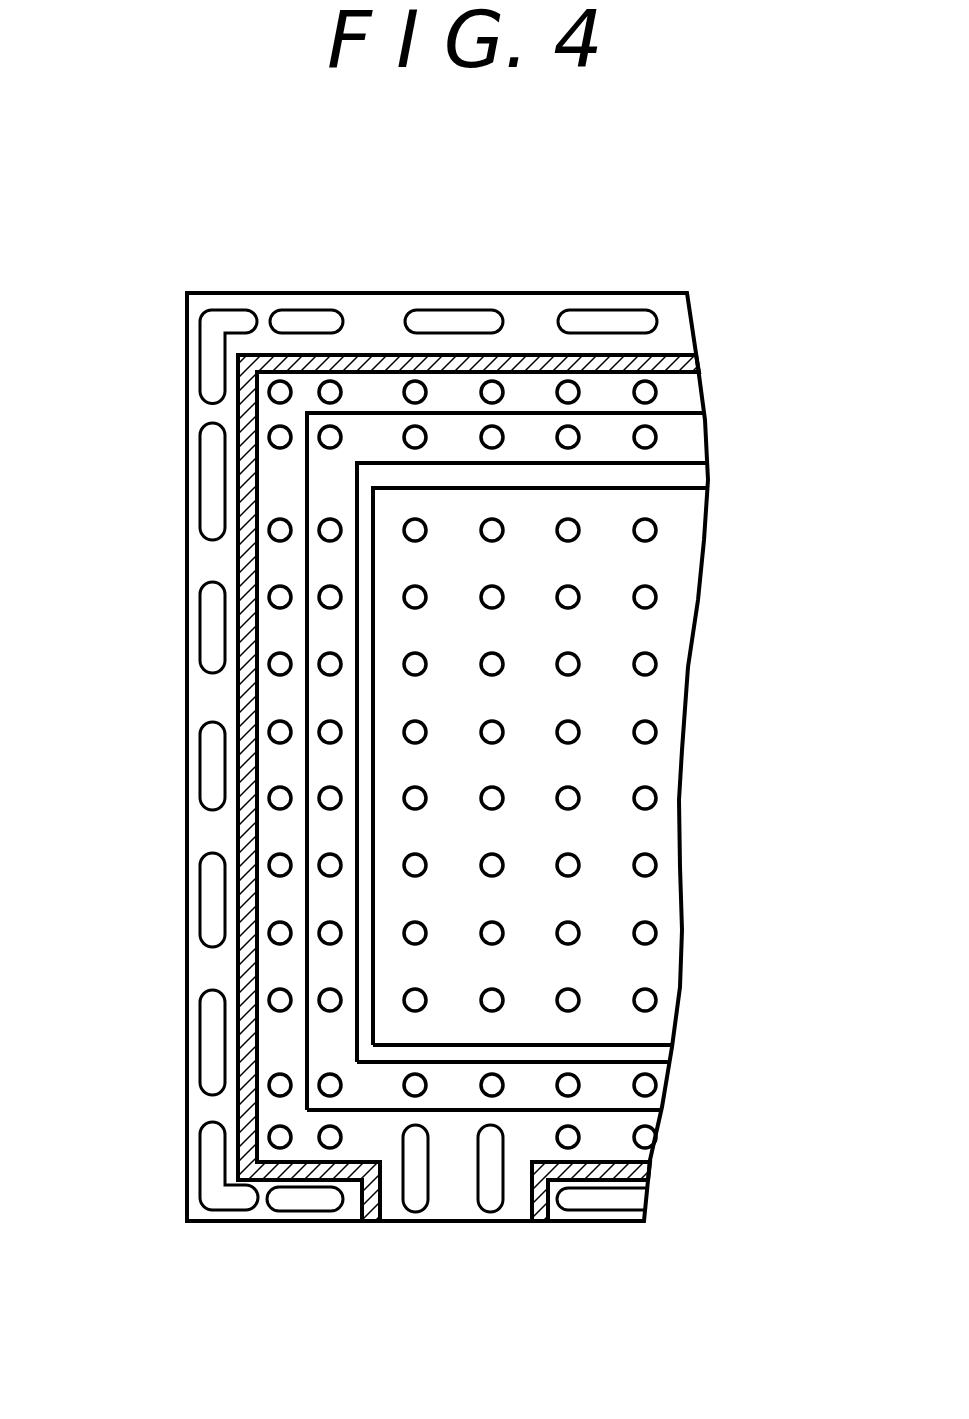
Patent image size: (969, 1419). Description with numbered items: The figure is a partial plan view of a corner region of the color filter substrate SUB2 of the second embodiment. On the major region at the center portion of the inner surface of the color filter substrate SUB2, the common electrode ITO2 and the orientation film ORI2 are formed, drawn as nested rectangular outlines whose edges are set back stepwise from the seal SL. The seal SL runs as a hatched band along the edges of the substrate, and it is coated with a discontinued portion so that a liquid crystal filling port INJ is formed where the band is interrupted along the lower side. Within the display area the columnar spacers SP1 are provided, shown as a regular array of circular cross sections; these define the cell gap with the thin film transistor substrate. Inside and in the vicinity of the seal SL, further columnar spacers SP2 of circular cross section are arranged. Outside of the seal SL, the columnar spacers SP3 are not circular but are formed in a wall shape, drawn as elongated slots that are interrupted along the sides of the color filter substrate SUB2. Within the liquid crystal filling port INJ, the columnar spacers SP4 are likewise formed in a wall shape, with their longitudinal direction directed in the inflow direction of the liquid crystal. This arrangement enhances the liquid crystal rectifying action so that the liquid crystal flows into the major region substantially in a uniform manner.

The color filter substrate SUB2 is at (215, 283).
The common electrode ITO2 is at (383, 455).
The seal SL is at (458, 355).
The orientation film ORI2 is at (606, 413).
The columnar spacers SP1 is at (405, 722).
The columnar spacers SP2 is at (273, 860).
The columnar spacers SP3 is at (206, 948).
The columnar spacers SP4 is at (477, 1214).
The liquid crystal filling port INJ is at (490, 1232).